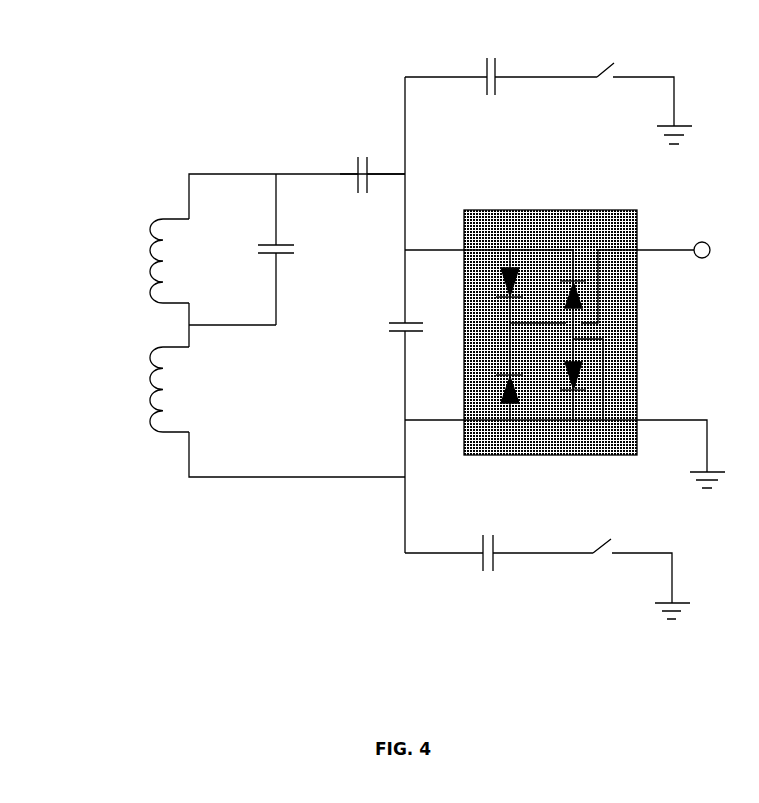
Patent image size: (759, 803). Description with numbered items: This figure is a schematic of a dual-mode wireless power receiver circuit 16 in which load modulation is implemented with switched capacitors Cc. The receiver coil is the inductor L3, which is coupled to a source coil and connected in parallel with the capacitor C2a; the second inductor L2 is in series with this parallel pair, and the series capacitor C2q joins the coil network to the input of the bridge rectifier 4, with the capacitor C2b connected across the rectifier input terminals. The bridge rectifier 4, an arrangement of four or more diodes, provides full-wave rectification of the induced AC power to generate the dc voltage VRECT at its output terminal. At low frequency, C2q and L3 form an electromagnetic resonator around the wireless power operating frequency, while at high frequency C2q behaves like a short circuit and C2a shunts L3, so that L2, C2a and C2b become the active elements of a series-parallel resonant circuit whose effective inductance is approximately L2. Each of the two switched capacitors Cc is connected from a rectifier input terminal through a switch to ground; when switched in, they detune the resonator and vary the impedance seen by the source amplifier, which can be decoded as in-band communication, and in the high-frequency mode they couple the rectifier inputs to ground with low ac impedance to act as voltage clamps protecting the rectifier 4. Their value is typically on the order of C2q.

The wireless power receiving circuit 16 is at (126, 84).
The bridge rectifier 4 is at (611, 206).
The inductor L2 is at (151, 389).
The inductor L3 is at (151, 261).
The capacitor C2a is at (294, 249).
The capacitor C2b is at (385, 315).
The capacitor C2q is at (372, 161).
The switched capacitors Cc is at (548, 322).
The dc voltage Vrect VRECT is at (684, 236).